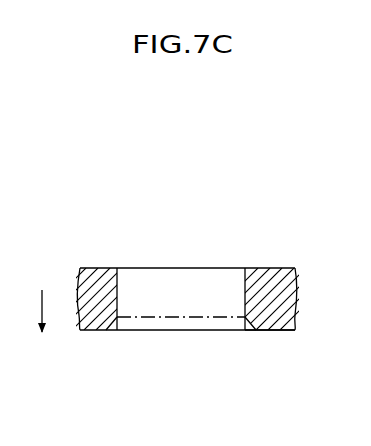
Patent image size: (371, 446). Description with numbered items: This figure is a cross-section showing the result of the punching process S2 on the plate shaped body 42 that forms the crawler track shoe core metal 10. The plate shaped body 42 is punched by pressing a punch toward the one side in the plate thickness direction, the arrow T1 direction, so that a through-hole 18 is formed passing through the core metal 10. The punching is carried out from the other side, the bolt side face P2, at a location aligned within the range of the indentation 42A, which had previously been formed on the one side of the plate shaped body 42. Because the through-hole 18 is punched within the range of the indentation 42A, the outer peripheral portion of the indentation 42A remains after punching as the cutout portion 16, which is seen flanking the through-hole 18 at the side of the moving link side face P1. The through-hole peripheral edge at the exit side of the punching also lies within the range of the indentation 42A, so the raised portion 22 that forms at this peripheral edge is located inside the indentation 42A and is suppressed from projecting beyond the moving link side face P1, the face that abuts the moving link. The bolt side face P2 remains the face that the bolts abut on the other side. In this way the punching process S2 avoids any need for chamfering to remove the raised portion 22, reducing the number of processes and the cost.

The crawler track shoe core metal 10 is at (183, 295).
The plate shaped body 42 is at (97, 266).
The indentation 42A is at (208, 319).
The through-hole 18 is at (138, 267).
The cutout portion 16 is at (110, 331).
The raised portion 22 is at (162, 331).
The moving link side face P1 is at (273, 331).
The bolt side face P2 is at (272, 267).
The punching process S2 is at (107, 193).
The arrow T1 direction T1 is at (47, 325).